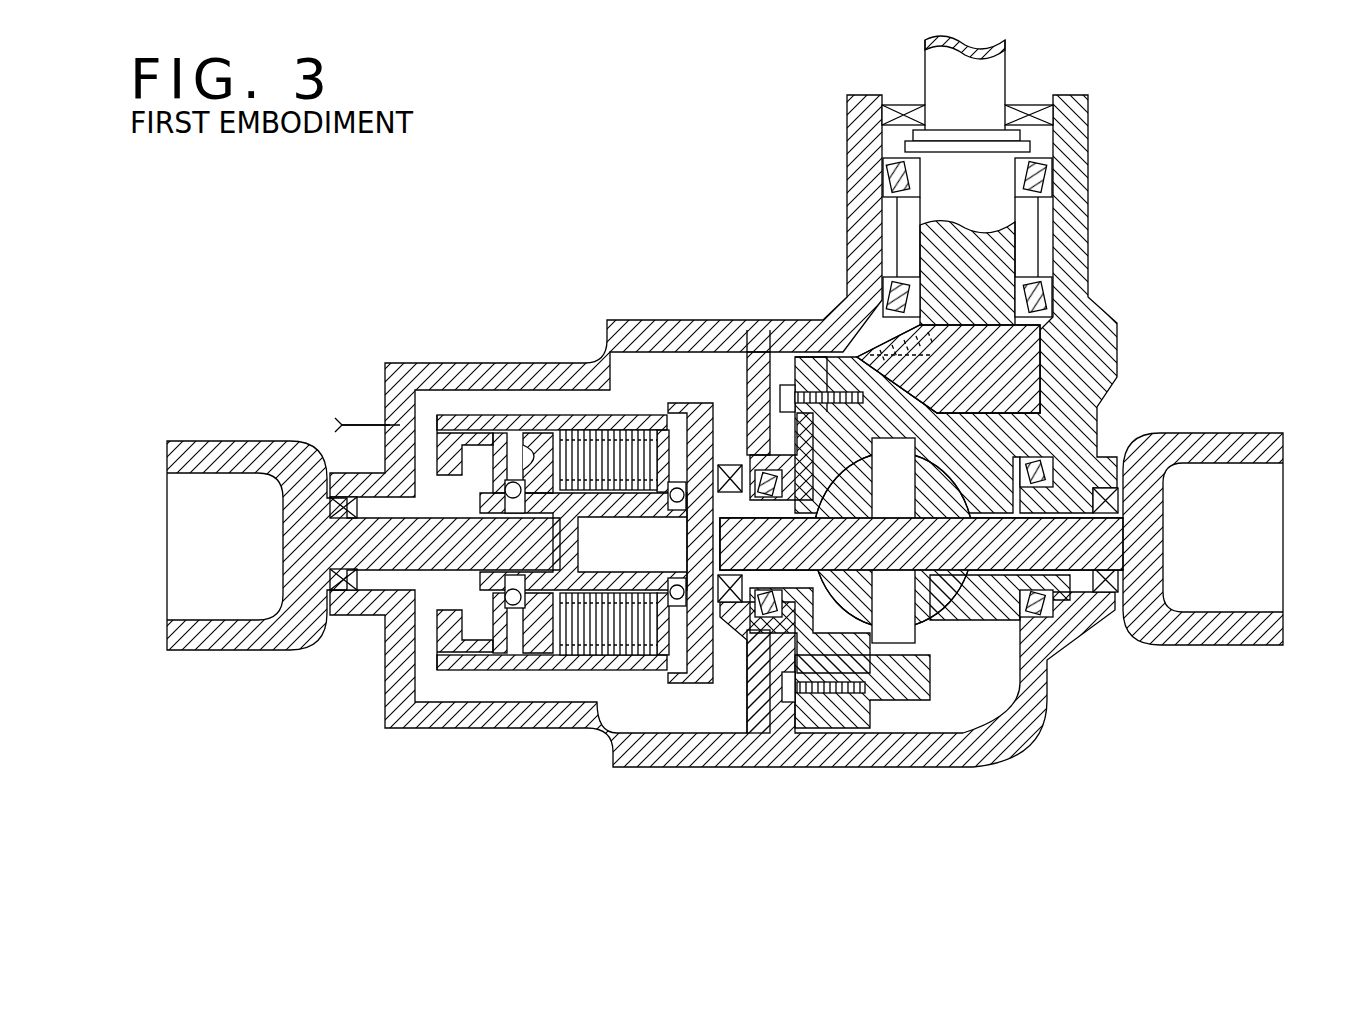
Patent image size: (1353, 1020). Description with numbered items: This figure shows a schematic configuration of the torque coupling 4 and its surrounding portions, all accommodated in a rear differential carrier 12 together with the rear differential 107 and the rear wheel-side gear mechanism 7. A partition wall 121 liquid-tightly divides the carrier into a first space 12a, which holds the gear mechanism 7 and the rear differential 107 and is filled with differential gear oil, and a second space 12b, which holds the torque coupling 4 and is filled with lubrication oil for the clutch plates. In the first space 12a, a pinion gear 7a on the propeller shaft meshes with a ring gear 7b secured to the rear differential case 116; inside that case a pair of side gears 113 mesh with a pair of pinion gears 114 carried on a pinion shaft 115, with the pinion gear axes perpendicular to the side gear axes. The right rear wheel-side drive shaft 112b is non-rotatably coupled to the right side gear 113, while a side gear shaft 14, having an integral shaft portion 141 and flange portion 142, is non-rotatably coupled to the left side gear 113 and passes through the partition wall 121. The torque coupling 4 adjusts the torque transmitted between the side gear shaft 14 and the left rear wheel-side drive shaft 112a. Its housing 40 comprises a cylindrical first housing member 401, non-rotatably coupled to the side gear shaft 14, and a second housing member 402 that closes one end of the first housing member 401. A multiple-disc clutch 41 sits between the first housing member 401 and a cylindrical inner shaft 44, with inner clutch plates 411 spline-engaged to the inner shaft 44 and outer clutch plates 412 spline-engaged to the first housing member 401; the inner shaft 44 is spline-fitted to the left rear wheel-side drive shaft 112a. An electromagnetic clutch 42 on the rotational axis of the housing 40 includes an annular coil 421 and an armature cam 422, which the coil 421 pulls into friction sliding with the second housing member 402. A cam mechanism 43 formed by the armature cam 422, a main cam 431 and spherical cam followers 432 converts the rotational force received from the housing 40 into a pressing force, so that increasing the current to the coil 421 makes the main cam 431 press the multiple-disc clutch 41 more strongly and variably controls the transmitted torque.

The torque coupling 4 is at (585, 526).
The rear wheel-side gear mechanism 7 is at (1034, 224).
The pinion gear 7a is at (1070, 345).
The ring gear 7b is at (1070, 318).
The rear differential carrier 12 is at (1068, 192).
The first space 12a is at (957, 717).
The second space 12b is at (663, 717).
The side gear shaft 14 is at (705, 697).
The housing 40 is at (657, 407).
The multiple-disc clutch 41 is at (561, 453).
The electromagnetic clutch 42 is at (363, 387).
The cam mechanism 43 is at (566, 624).
The inner shaft 44 is at (508, 480).
The rear differential 107 is at (968, 677).
The left rear wheel-side drive shaft 112a is at (330, 640).
The right rear wheel-side drive shaft 112b is at (1050, 575).
The side gear 113 is at (1000, 428).
The pinion gear 114 is at (1070, 425).
The pinion shaft 115 is at (895, 640).
The rear differential case 116 is at (1057, 695).
The partition wall 121 is at (758, 683).
The shaft portion 141 is at (767, 350).
The flange portion 142 is at (740, 330).
The first housing member 401 is at (470, 660).
The second housing member 402 is at (430, 640).
The inner clutch plate 411 is at (615, 405).
The outer clutch plate 412 is at (565, 412).
The coil 421 is at (440, 440).
The armature cam 422 is at (470, 420).
The main cam 431 is at (550, 652).
The cam follower 432 is at (483, 657).